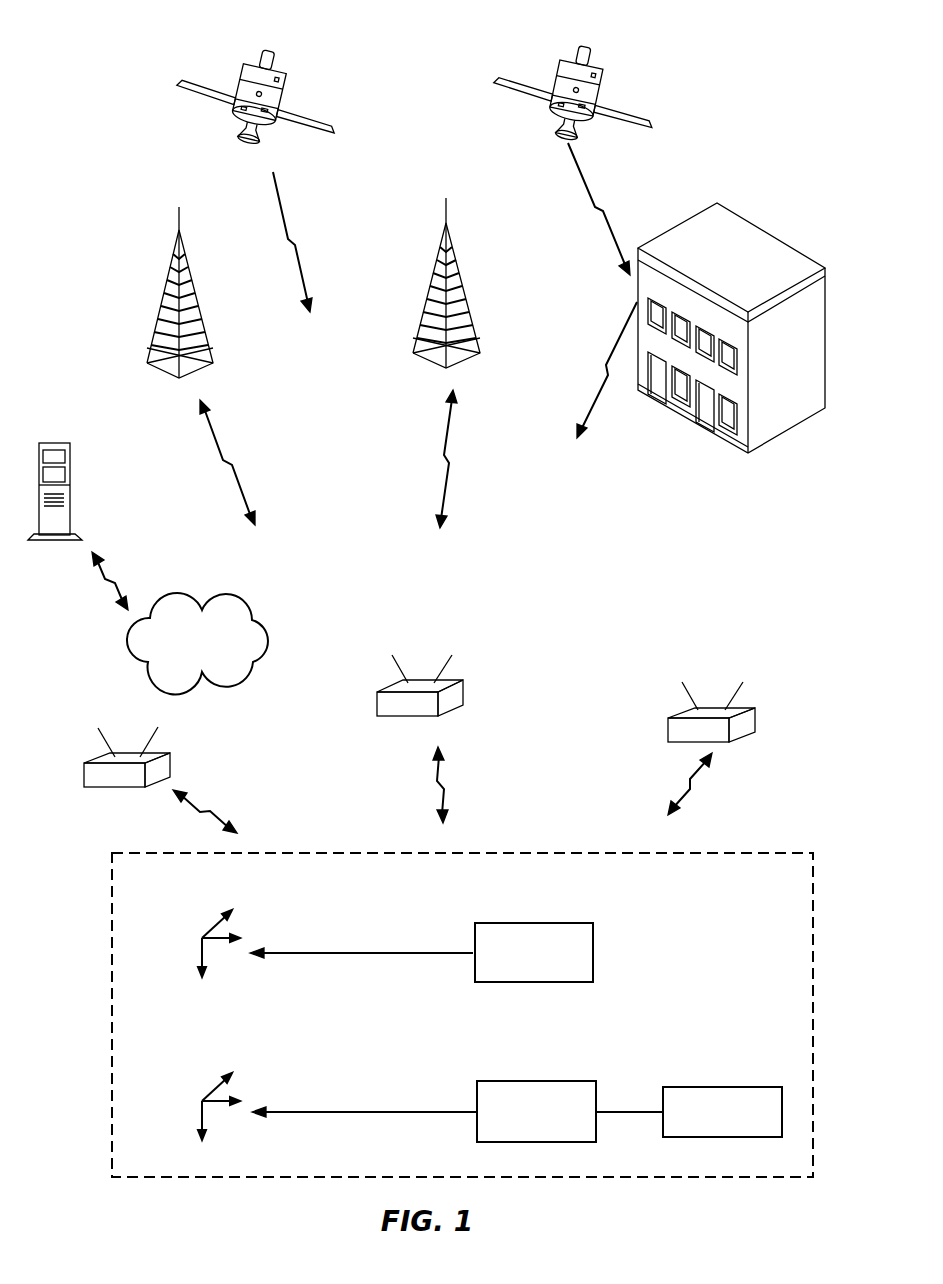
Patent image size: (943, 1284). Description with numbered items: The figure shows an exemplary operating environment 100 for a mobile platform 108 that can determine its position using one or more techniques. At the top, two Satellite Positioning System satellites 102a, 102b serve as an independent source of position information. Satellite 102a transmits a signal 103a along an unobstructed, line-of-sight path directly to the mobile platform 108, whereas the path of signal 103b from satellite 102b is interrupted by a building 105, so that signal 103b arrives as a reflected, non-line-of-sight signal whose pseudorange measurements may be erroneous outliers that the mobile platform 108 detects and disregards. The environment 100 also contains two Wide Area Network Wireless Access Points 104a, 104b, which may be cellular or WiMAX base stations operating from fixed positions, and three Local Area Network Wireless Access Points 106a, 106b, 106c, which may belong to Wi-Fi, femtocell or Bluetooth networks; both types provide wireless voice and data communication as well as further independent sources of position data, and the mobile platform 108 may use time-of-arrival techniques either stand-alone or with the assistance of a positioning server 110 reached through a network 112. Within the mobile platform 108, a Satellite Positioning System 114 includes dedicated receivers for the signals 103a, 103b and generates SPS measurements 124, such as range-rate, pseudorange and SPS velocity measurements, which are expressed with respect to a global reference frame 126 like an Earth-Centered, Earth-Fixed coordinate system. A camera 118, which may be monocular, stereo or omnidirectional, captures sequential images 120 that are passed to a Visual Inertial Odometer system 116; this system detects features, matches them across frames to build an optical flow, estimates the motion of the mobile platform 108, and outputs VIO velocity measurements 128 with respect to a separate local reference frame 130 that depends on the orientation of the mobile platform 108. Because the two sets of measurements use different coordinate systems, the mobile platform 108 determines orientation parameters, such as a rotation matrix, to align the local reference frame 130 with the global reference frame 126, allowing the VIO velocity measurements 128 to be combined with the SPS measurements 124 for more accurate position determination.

The operating environment 100 is at (71, 36).
The SPS satellite 102a is at (267, 55).
The SPS satellite 102b is at (577, 50).
The signal 103a is at (280, 198).
The signal 103b is at (598, 397).
The Wide Area Network Wireless Access Point 104a is at (178, 215).
The Wide Area Network Wireless Access Point 104b is at (447, 206).
The building 105 is at (745, 217).
The Local Area Network Wireless Access Point 106a is at (170, 753).
The Local Area Network Wireless Access Point 106b is at (463, 683).
The Local Area Network Wireless Access Point 106c is at (668, 722).
The mobile platform 108 is at (733, 853).
The positioning server 110 is at (52, 443).
The network 112 is at (220, 600).
The Satellite Positioning System 114 is at (593, 942).
The Visual Inertial Odometer system 116 is at (533, 1080).
The camera 118 is at (723, 1086).
The images 120 is at (633, 1113).
The SPS measurements 124 is at (365, 905).
The global reference frame 126 is at (218, 918).
The VIO velocity measurements 128 is at (382, 1065).
The local reference frame 130 is at (220, 1080).